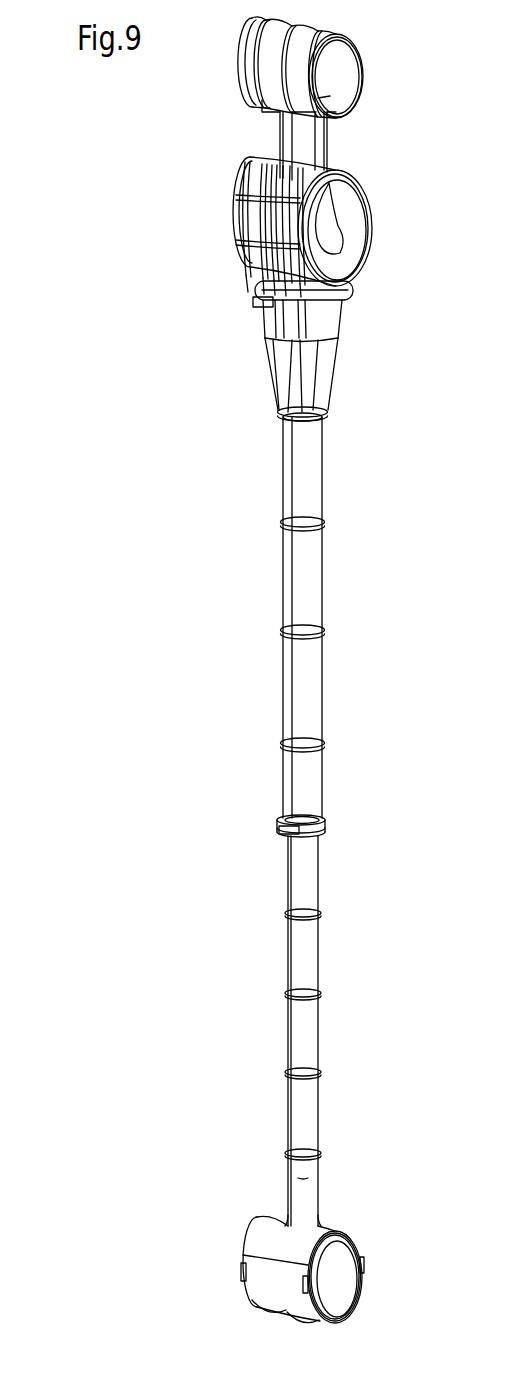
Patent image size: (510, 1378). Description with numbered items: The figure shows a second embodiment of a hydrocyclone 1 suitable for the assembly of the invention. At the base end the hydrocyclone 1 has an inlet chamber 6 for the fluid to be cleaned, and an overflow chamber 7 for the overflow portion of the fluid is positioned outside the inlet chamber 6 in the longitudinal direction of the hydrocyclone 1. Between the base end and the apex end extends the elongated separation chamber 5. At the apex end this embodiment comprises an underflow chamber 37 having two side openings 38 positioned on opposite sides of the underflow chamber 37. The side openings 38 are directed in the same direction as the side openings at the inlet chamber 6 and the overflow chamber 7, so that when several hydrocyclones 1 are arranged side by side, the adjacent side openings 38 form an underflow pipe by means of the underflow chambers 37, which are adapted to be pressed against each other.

The hydrocyclone 1 is at (170, 750).
The separation chamber 5 is at (307, 580).
The inlet chamber 6 is at (347, 247).
The overflow chamber 7 is at (340, 92).
The underflow chamber 37 is at (335, 1287).
The side openings 38 is at (347, 1233).